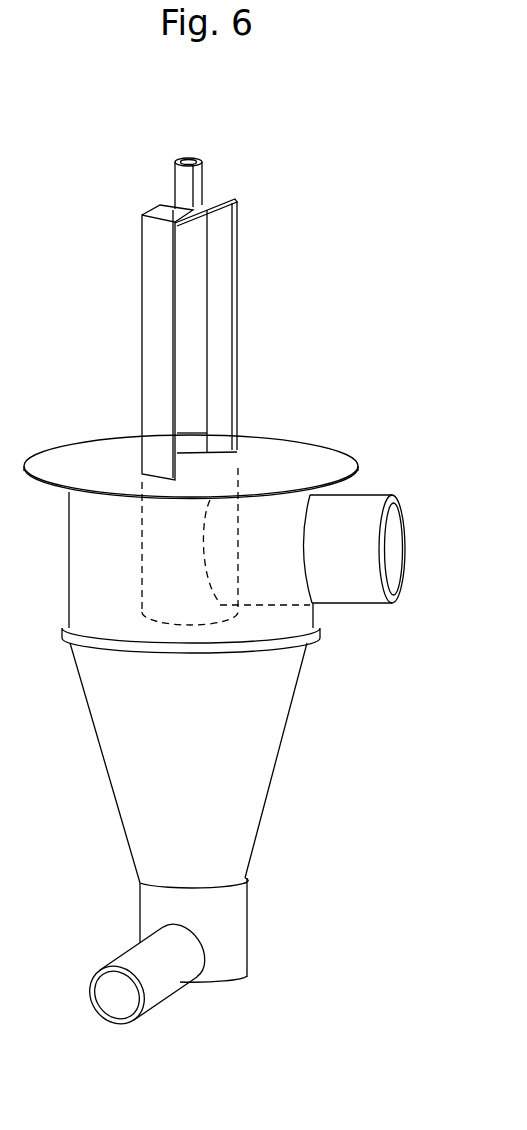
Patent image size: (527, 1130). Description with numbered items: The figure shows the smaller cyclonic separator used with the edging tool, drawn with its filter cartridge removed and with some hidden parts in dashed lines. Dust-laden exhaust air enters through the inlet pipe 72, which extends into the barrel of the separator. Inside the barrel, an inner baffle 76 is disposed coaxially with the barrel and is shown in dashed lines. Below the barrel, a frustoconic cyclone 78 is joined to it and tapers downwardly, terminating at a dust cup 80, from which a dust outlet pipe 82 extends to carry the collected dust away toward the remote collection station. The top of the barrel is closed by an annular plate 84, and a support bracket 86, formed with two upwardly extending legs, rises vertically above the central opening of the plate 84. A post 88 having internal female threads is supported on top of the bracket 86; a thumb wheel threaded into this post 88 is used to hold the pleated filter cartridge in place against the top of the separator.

The inlet pipe 72 is at (340, 590).
The inner baffle 76 is at (148, 566).
The frustoconic cyclone 78 is at (253, 810).
The dust cup 80 is at (230, 948).
The dust outlet pipe 82 is at (120, 950).
The annular plate 84 is at (292, 448).
The support bracket 86 is at (227, 318).
The post 88 is at (200, 177).